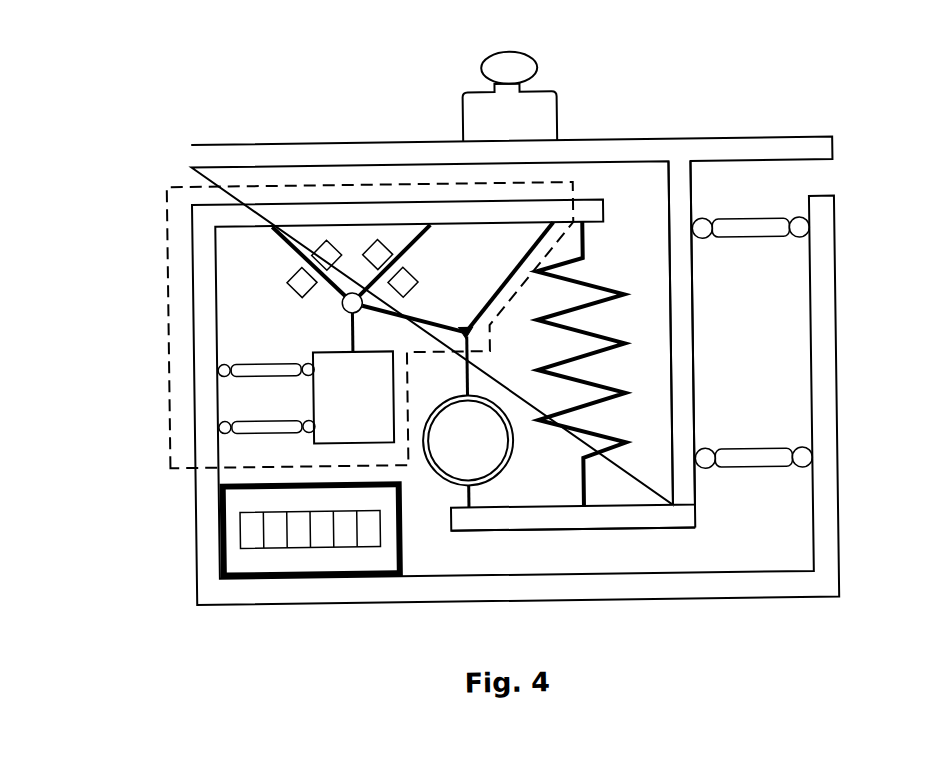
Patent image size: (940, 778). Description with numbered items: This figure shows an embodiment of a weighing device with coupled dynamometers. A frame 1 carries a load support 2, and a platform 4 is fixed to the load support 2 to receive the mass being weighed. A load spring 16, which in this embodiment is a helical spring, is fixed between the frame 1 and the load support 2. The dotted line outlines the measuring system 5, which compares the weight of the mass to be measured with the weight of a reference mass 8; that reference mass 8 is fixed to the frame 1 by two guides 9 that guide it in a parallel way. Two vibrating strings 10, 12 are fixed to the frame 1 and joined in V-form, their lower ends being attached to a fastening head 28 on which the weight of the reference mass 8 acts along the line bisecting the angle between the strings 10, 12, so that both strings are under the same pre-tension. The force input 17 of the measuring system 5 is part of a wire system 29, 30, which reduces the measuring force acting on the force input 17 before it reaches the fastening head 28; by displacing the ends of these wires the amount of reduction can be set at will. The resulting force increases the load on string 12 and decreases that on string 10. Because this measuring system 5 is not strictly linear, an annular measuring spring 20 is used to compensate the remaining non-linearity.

The frame 1 is at (820, 398).
The load support 2 is at (681, 378).
The platform 4 is at (814, 158).
The measuring system 5 is at (239, 291).
The reference mass 8 is at (332, 429).
The guides 9 is at (258, 428).
The vibrating string 10 is at (411, 250).
The second vibrating string 12 is at (291, 254).
The load spring 16 is at (605, 392).
The force-input point 17 is at (461, 340).
The measuring spring 20 is at (430, 463).
The fastening head 28 is at (338, 310).
The wire system 29 is at (423, 328).
The wire system 30 is at (491, 307).